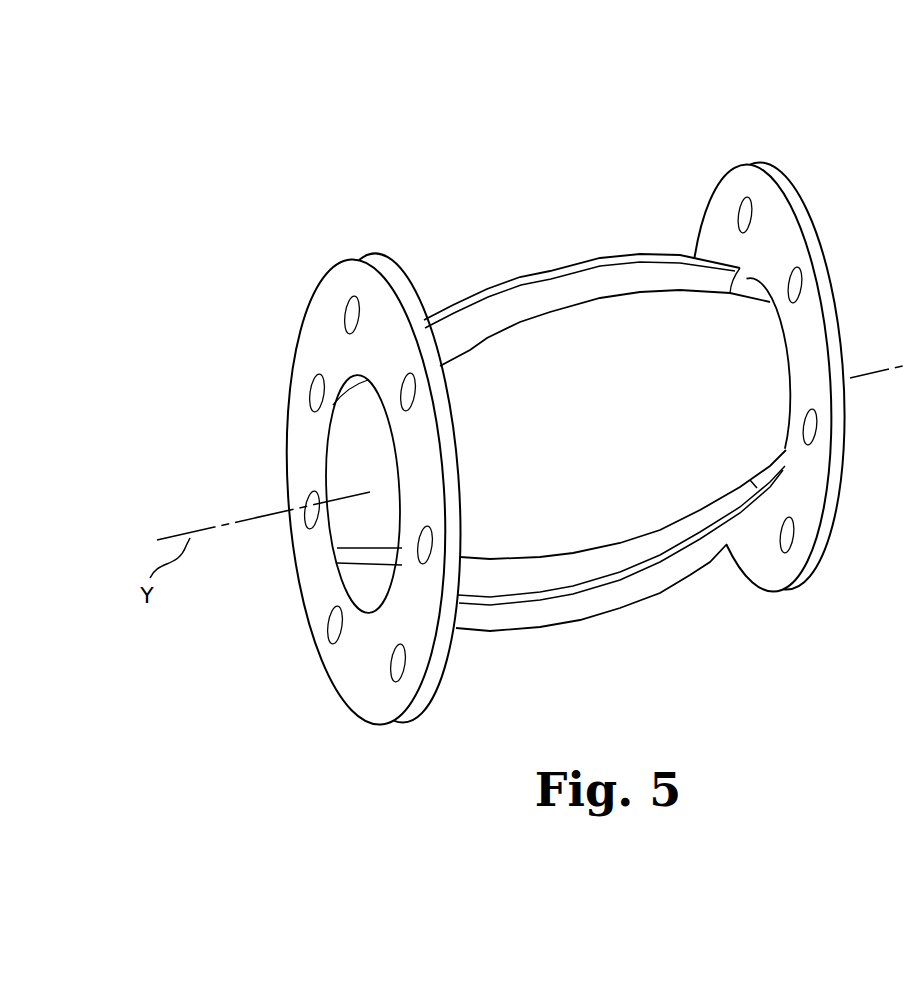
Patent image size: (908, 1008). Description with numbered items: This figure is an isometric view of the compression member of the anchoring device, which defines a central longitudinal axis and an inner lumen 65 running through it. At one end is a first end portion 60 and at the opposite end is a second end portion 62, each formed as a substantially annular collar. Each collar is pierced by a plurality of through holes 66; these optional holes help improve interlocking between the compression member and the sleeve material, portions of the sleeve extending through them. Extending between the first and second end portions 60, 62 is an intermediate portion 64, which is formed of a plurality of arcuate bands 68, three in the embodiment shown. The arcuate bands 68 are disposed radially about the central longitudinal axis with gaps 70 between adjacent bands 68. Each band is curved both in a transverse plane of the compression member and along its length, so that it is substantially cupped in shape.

The first end portion 60 is at (374, 746).
The second end portion 62 is at (778, 610).
The intermediate portion 64 is at (586, 645).
The inner lumen 65 is at (343, 474).
The through holes 66 is at (392, 667).
The arcuate bands 68 is at (525, 275).
The gaps 70 is at (607, 280).